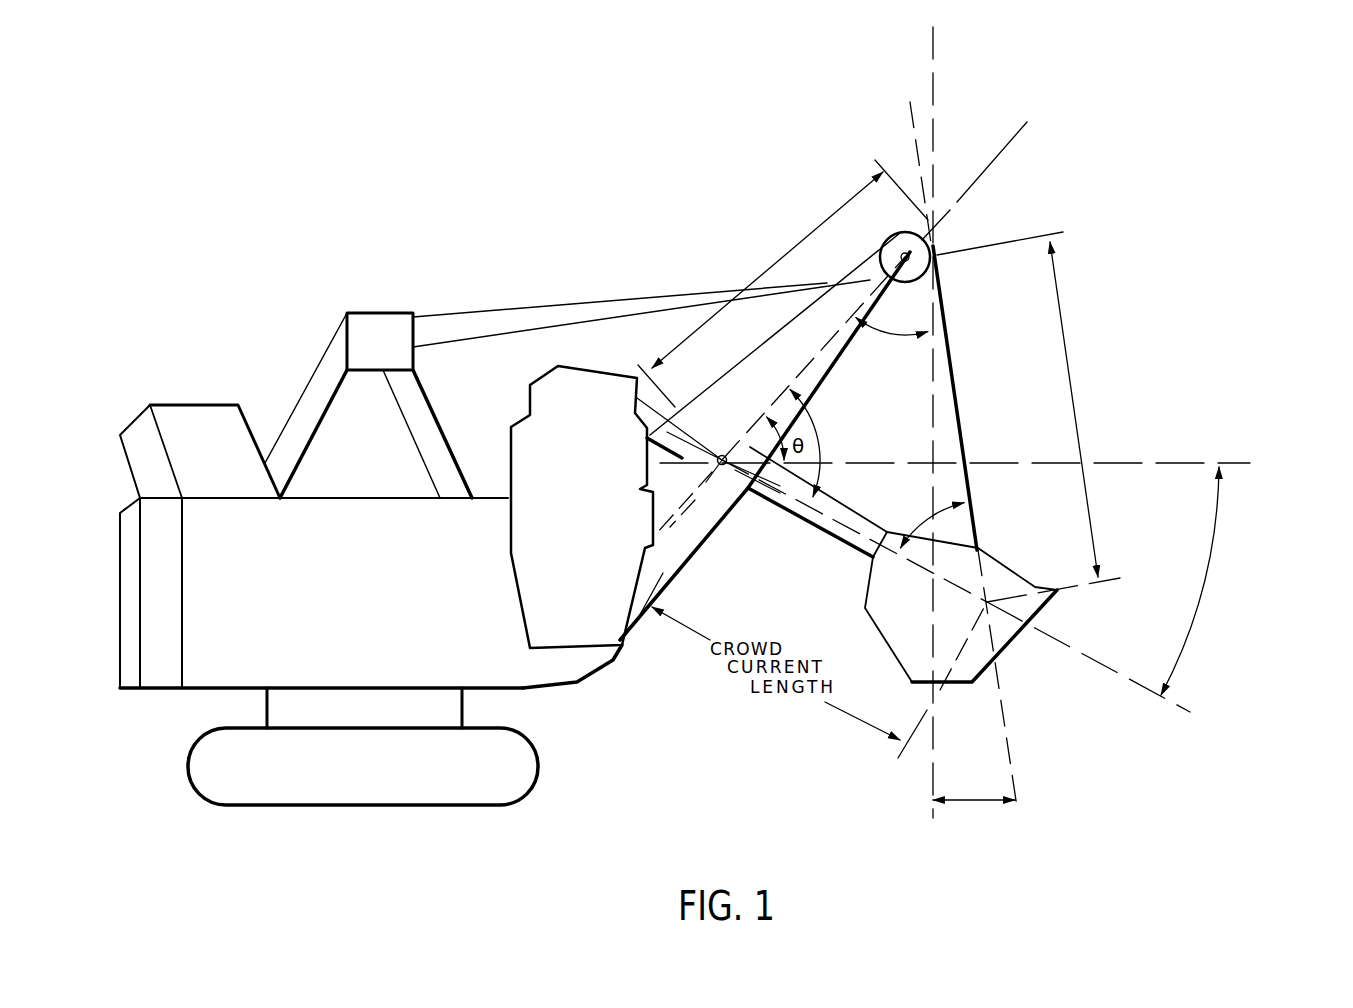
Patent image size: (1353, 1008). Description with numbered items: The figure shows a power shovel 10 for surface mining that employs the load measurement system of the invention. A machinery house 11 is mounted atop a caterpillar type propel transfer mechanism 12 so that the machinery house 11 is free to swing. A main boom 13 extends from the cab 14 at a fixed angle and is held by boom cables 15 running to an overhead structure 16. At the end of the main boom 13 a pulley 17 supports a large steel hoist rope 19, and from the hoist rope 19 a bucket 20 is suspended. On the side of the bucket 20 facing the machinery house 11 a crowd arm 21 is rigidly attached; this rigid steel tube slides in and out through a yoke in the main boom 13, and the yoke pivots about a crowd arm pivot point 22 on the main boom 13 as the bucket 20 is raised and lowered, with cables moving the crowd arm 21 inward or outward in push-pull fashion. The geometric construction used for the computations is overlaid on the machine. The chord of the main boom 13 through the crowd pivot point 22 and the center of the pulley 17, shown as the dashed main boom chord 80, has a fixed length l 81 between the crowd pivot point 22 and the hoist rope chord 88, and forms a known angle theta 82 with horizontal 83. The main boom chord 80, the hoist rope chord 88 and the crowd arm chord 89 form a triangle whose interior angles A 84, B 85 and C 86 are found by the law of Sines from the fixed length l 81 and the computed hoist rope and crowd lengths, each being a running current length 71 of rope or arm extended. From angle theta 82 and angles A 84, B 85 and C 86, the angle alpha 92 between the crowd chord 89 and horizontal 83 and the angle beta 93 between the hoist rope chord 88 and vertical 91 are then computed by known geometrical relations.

The power shovel 10 is at (584, 699).
The machinery house 11 is at (357, 609).
The caterpillar type propel transfer mechanism 12 is at (530, 788).
The main boom 13 is at (870, 272).
The cab 14 is at (518, 443).
The boom cables 15 is at (517, 332).
The overhead structure 16 is at (380, 328).
The pulley 17 is at (933, 241).
The hoist rope 19 is at (940, 331).
The bucket 20 is at (1015, 645).
The crowd arm 21 is at (817, 533).
The crowd arm pivot point 22 is at (715, 463).
The current length 71 is at (1120, 417).
The main boom chord 80 is at (1010, 140).
The length l 81 is at (783, 283).
The angle theta 82 is at (728, 458).
The horizontal 83 is at (1128, 468).
The interior angle A 84 is at (905, 332).
The interior angle B 85 is at (813, 415).
The interior angle C 86 is at (975, 533).
The hoist rope chord 88 is at (920, 165).
The crowd arm chord 89 is at (1068, 646).
The vertical 91 is at (936, 86).
The angle alpha 92 is at (1207, 595).
The angle beta 93 is at (988, 805).